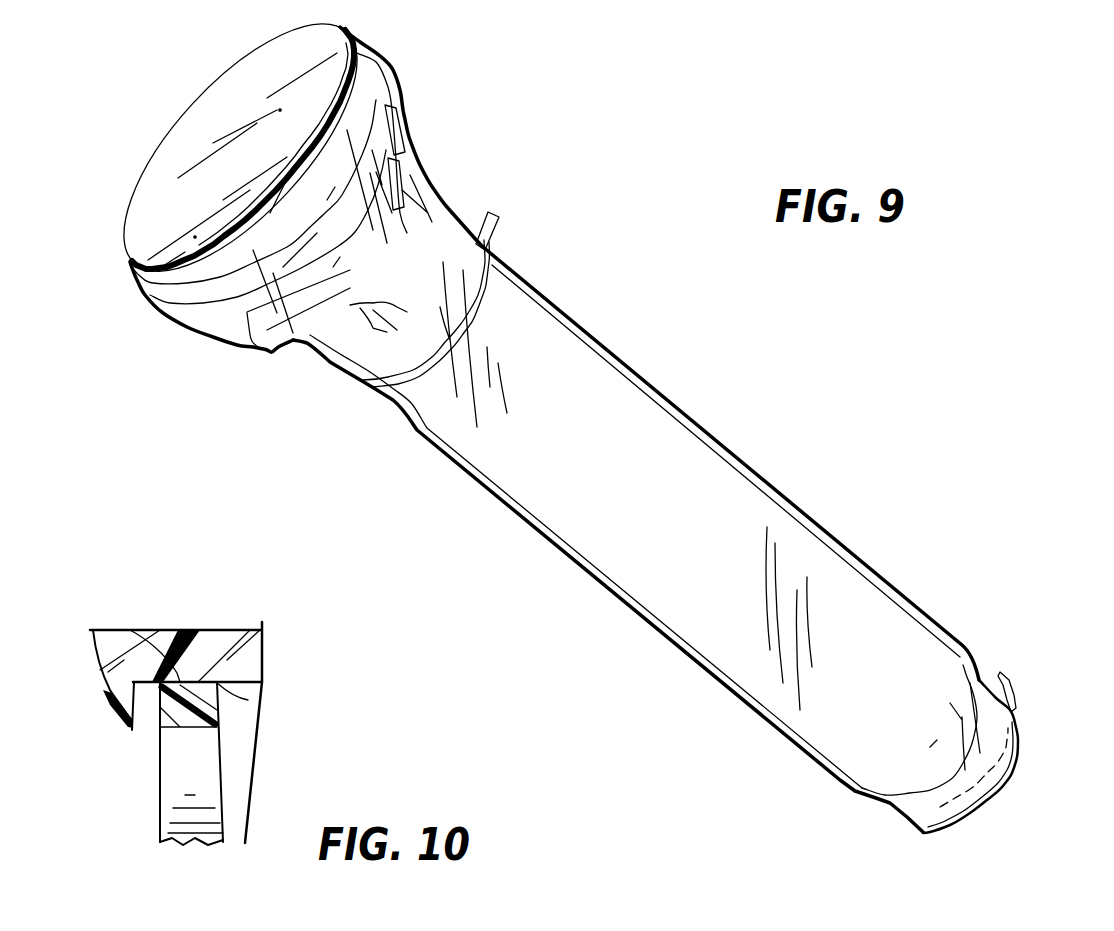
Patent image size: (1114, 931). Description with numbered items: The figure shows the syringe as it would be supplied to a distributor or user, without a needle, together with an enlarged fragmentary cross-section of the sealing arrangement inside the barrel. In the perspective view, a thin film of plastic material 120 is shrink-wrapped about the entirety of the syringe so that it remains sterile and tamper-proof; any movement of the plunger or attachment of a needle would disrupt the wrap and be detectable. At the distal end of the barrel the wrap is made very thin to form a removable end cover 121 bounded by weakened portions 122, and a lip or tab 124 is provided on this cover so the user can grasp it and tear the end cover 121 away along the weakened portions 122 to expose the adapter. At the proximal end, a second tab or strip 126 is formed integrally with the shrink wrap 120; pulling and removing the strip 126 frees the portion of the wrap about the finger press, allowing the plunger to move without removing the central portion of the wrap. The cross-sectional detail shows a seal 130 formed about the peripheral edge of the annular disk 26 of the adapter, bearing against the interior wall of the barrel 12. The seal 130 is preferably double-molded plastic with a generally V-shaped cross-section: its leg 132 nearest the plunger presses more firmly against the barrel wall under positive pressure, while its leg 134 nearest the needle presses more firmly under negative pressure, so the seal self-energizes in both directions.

In FIG. 9, the thin film of plastic material 120 is at (652, 390).
In FIG. 9, the end cover 121 is at (985, 805).
In FIG. 9, the weakened portions 122 is at (1003, 770).
In FIG. 9, the lip or tab 124 is at (1016, 690).
In FIG. 9, the second tab or strip 126 is at (493, 213).
In FIG. 10, the barrel 12 is at (160, 630).
In FIG. 10, the annular disk 26 is at (175, 781).
In FIG. 10, the seal 130 is at (262, 734).
In FIG. 10, the leg 132 is at (210, 693).
In FIG. 10, the leg 134 is at (132, 631).